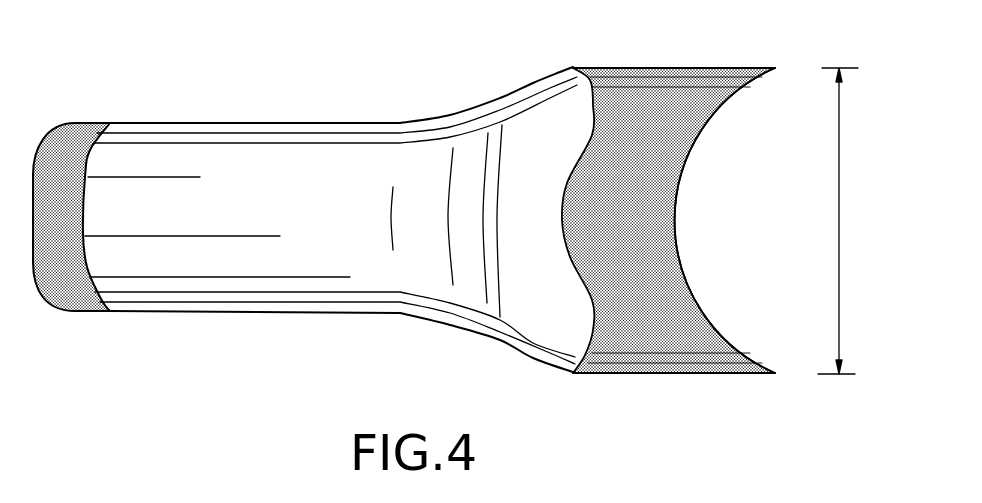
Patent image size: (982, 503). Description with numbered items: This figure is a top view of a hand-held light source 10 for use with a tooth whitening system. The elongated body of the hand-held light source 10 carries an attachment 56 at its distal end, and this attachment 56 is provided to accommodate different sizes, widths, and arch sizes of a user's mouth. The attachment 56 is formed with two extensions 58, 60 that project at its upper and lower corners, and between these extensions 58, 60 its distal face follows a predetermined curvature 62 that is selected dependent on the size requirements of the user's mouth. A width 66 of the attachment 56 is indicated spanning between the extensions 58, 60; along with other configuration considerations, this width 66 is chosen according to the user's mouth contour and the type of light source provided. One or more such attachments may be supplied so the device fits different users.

The hand-held light source 10 is at (223, 72).
The attachment 56 is at (655, 373).
The extension 58 is at (775, 68).
The extension 60 is at (775, 373).
The predetermined curvature 62 is at (717, 123).
The width 66 is at (837, 257).